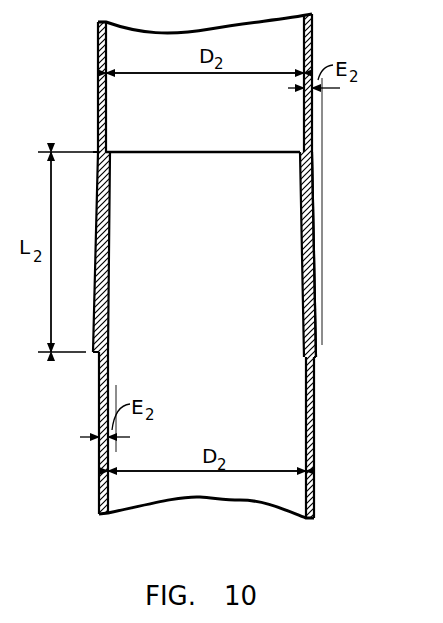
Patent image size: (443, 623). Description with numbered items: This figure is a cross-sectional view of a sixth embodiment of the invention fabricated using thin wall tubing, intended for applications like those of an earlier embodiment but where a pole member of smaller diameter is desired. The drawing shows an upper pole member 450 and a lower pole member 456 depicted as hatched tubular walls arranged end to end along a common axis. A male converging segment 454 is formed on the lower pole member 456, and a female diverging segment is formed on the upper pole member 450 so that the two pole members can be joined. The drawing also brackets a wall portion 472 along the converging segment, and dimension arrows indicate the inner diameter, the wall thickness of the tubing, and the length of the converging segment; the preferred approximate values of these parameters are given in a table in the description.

The upper pole member 450 is at (312, 31).
The male converging segment 454 is at (300, 152).
The lower pole member 456 is at (314, 462).
The thickened wall portion 472 is at (318, 350).